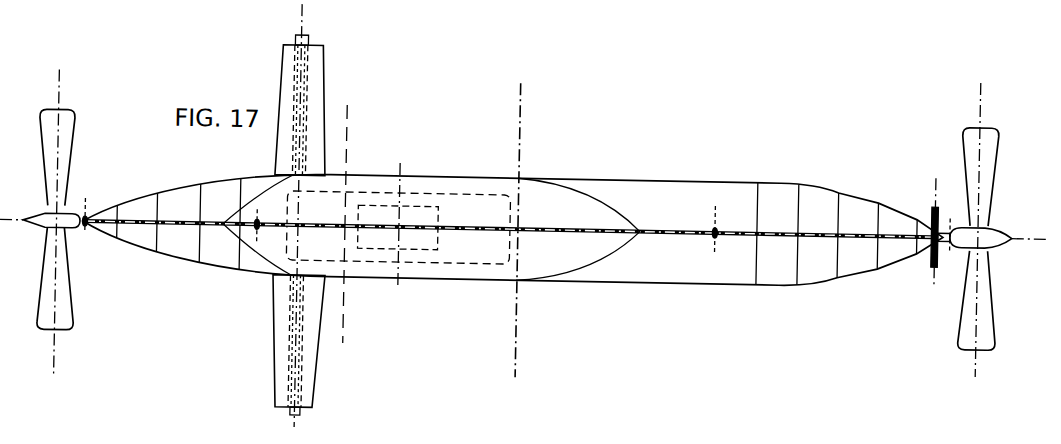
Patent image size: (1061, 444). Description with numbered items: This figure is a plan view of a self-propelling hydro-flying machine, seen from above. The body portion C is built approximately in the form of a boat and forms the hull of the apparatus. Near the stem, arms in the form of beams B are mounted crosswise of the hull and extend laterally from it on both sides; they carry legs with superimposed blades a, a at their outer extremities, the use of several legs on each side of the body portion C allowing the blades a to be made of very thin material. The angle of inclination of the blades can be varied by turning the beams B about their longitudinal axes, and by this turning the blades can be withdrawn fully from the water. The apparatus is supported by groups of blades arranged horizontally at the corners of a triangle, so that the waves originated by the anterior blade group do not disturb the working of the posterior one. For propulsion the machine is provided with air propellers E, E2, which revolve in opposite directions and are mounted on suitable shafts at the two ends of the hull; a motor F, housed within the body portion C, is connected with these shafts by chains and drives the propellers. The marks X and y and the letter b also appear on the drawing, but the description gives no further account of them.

The body portion C is at (513, 229).
The air propeller E is at (66, 137).
The air propeller E2 is at (987, 131).
The blades a is at (612, 228).
The beams B is at (299, 216).
The motor F is at (398, 226).
The forward propeller boss b is at (6, 247).
The section line X is at (361, 159).
The section line y is at (358, 290).